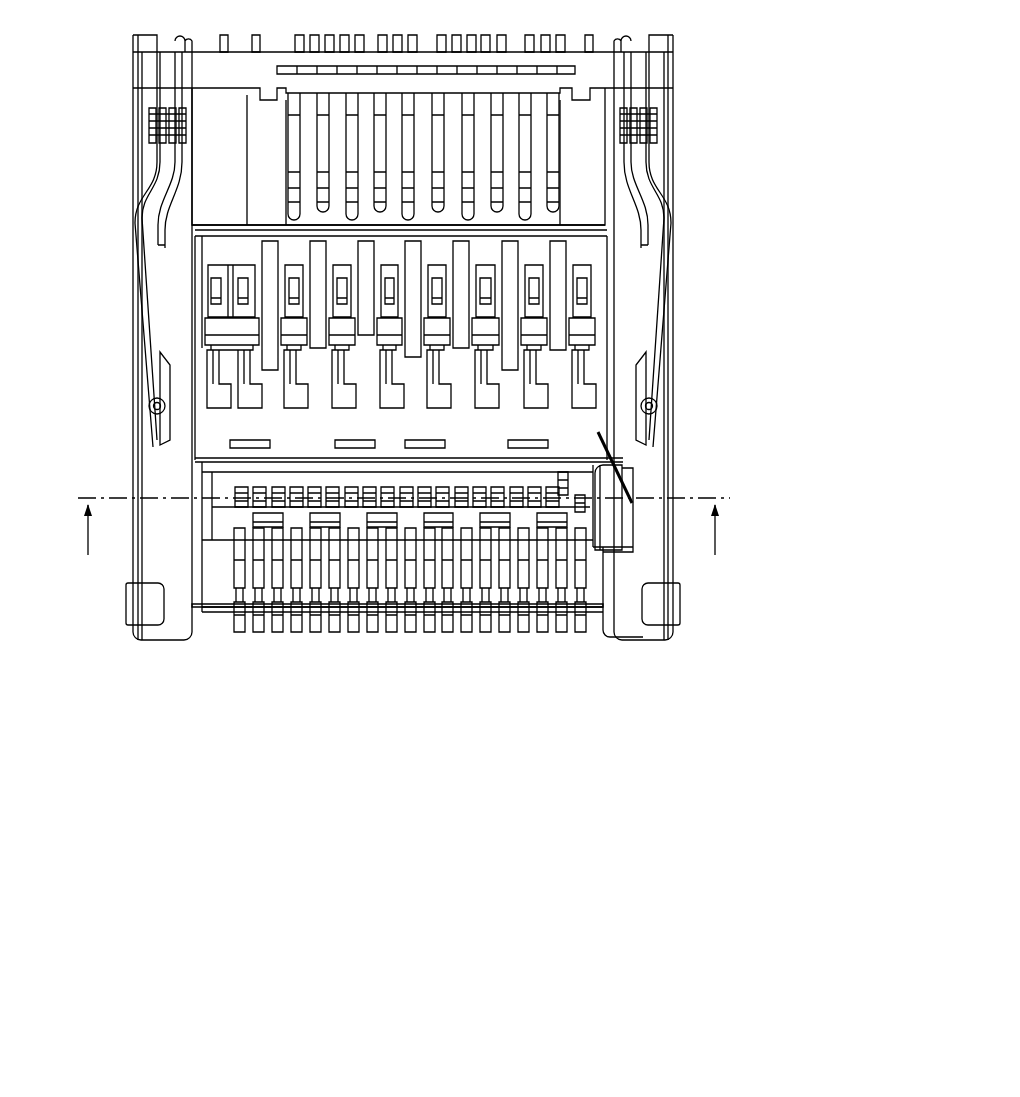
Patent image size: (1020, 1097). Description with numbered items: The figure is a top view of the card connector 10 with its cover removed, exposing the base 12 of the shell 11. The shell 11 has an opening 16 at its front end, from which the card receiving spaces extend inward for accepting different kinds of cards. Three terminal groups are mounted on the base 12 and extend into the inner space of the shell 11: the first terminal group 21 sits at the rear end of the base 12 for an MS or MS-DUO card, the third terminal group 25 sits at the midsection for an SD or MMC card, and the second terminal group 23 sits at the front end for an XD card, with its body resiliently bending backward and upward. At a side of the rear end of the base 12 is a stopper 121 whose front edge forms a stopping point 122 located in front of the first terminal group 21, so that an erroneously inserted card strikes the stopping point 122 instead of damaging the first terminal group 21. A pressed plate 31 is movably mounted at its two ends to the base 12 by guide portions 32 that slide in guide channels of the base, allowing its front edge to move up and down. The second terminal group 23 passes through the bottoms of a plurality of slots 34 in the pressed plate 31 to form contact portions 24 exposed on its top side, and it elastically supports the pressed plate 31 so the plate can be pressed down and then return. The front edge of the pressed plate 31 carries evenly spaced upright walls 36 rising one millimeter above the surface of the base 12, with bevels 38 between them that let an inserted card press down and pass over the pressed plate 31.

The card connector 10 is at (197, 773).
The shell 11 is at (133, 318).
The base 12 is at (135, 205).
The stopper 121 is at (217, 135).
The stopping point 122 is at (226, 230).
The opening 16 is at (217, 620).
The first terminal group 21 is at (557, 155).
The second terminal group 23 is at (428, 634).
The contact portions 24 is at (232, 496).
The third terminal group 25 is at (592, 323).
The pressed plate 31 is at (585, 460).
The guide portions 32 is at (613, 490).
The slots 34 is at (245, 495).
The upright walls 36 is at (308, 600).
The bevels 38 is at (458, 603).